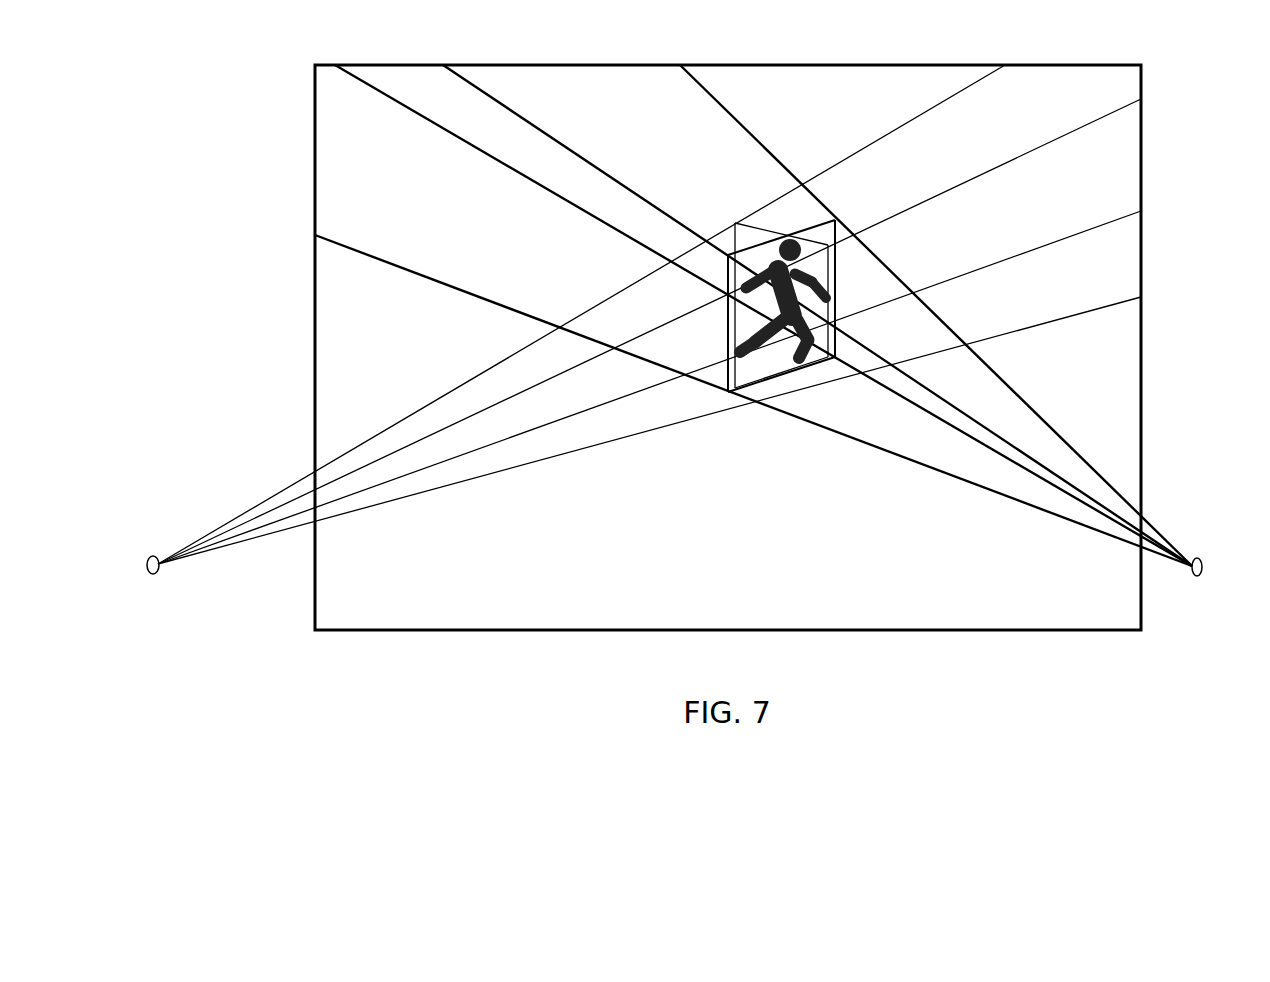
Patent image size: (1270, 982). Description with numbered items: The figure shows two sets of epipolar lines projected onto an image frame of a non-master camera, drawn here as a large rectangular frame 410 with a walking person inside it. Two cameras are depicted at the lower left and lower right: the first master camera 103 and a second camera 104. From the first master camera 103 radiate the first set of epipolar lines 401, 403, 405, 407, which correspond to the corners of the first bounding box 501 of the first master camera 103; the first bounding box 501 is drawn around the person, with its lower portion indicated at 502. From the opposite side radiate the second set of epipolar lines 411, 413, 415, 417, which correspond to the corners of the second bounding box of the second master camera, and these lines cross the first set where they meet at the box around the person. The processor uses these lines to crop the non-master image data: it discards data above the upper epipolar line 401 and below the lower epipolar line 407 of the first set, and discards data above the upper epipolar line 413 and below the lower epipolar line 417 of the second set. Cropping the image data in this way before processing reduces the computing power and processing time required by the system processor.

The first master camera 103 is at (157, 574).
The second camera 104 is at (1201, 576).
The upper epipolar line of the first set 401 is at (976, 84).
The epipolar line of the first set 403 is at (943, 192).
The epipolar line of the first set 405 is at (1053, 245).
The lower epipolar line of the first set 407 is at (1073, 313).
The monitored area / scene boundary 410 is at (318, 196).
The epipolar line of the second set 411 is at (551, 138).
The upper epipolar line of the second set 413 is at (726, 114).
The epipolar line of the second set 415 is at (435, 123).
The lower epipolar line of the second set 417 is at (487, 299).
The first bounding box 501 is at (757, 230).
The bounding box bottom face 502 is at (753, 388).